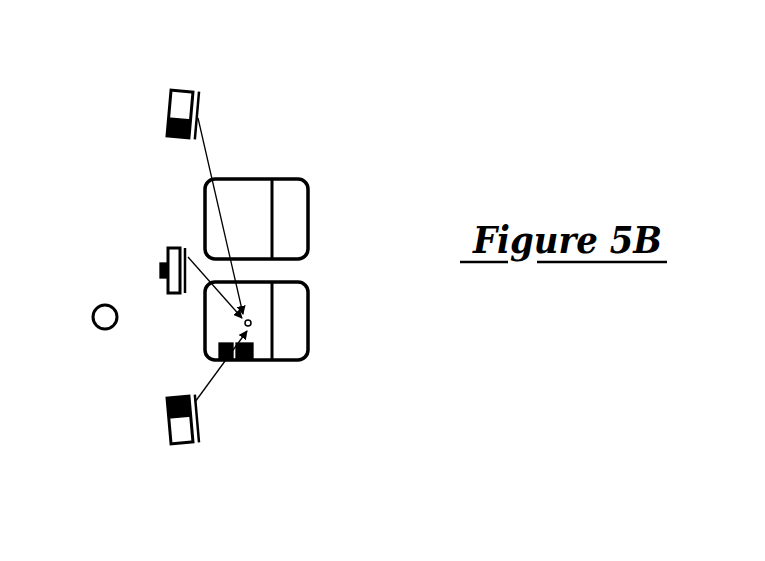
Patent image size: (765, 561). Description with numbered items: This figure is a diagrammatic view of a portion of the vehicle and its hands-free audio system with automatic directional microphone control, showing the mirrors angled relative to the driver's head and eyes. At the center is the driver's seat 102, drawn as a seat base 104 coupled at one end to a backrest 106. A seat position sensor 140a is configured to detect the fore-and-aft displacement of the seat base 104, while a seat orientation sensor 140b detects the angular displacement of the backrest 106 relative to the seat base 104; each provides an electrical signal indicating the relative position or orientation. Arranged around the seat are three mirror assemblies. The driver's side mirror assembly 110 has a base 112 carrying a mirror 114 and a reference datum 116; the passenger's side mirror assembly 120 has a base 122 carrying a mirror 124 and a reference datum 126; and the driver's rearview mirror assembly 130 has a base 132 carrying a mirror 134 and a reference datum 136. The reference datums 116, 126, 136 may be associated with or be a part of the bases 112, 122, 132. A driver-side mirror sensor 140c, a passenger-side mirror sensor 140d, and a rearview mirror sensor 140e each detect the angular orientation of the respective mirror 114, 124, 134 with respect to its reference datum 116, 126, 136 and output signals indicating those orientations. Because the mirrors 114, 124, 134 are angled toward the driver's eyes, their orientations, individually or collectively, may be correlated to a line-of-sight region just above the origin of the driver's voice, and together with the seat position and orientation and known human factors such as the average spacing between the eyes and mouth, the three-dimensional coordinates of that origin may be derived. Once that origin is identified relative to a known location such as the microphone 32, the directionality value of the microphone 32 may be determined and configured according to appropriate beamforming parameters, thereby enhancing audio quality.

The microphone 32 is at (104, 330).
The driver's seat 102 is at (312, 344).
The seat base 104 is at (265, 298).
The backrest 106 is at (293, 315).
The driver's side mirror assembly 110 is at (170, 433).
The base 112 is at (168, 410).
The mirror 114 is at (199, 430).
The reference datum 116 is at (170, 438).
The passenger's side mirror assembly 120 is at (182, 100).
The base 122 is at (170, 97).
The mirror 124 is at (198, 108).
The reference datum 126 is at (170, 122).
The driver's rearview mirror assembly 130 is at (124, 283).
The base 132 is at (168, 255).
The mirror 134 is at (186, 252).
The reference datum 136 is at (168, 287).
The seat position sensor 140a is at (222, 343).
The seat orientation sensor 140b is at (250, 360).
The driver-side mirror sensor 140c is at (178, 398).
The passenger-side mirror sensor 140d is at (168, 138).
The rearview mirror sensor 140e is at (160, 270).